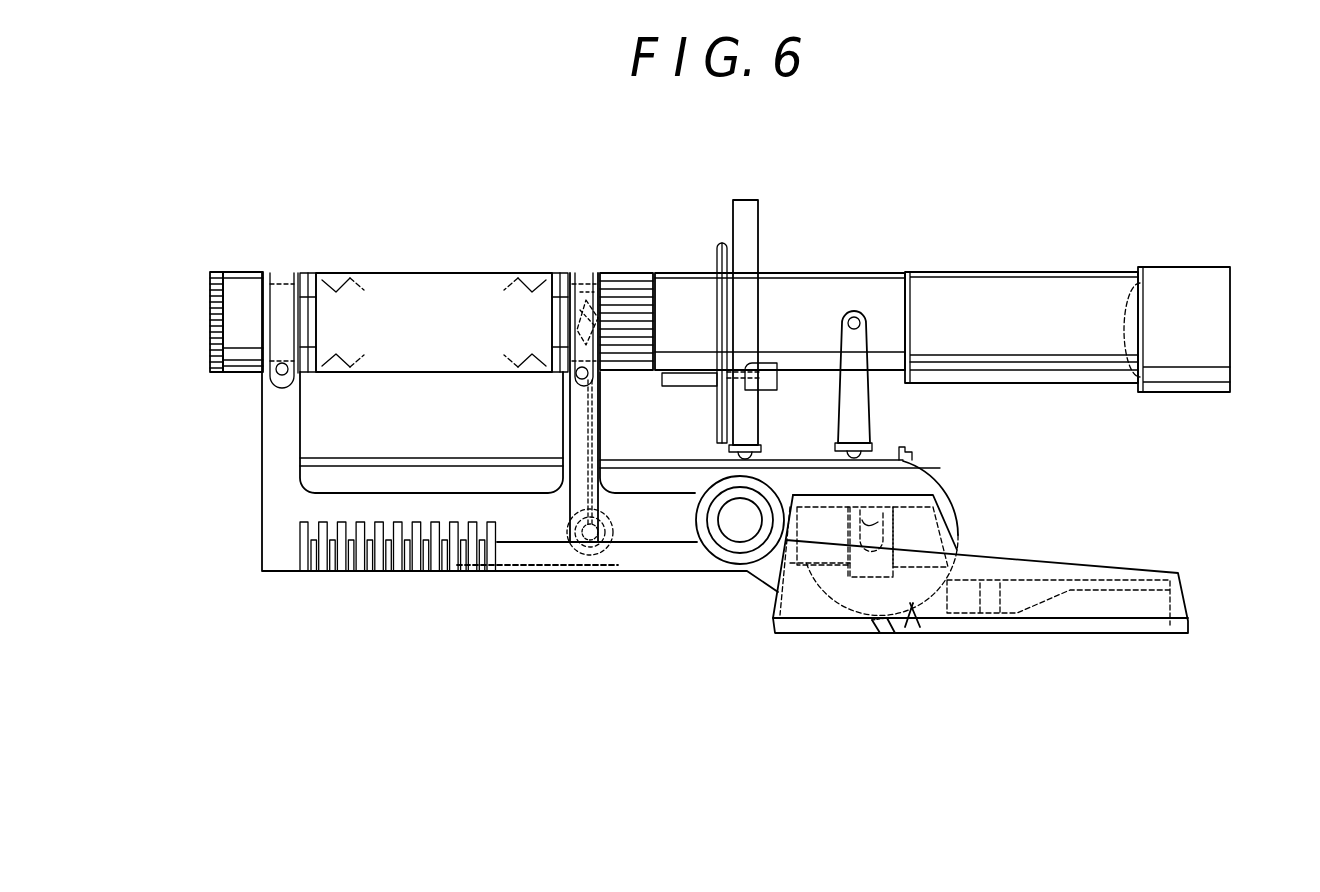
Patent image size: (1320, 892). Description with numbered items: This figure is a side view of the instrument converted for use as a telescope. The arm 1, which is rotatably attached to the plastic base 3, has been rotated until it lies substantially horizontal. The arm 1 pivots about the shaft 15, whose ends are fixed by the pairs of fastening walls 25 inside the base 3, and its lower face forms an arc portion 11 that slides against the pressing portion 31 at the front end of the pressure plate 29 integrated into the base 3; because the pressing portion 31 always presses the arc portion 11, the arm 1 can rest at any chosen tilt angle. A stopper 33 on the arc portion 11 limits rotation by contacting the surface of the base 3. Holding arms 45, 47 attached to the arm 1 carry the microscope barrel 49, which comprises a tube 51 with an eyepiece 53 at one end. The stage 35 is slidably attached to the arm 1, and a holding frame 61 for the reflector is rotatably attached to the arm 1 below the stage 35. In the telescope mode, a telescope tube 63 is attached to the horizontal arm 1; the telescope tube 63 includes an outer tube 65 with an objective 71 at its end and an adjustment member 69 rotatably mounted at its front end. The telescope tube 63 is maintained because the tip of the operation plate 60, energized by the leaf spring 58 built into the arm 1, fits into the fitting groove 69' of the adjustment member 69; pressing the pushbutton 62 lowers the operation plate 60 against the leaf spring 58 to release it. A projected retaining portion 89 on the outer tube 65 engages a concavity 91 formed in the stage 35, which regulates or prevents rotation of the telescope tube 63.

The arm 1 is at (562, 573).
The base 3 is at (1100, 633).
The arc portion 11 is at (917, 620).
The shaft 15 is at (870, 512).
The fastening walls 25 is at (887, 540).
The pressure plate 29 is at (905, 627).
The pressing portion 31 is at (867, 627).
The stopper 33 is at (905, 452).
The stage 35 is at (752, 222).
The holding arm 45 is at (292, 412).
The holding arm 47 is at (568, 418).
The microscope barrel 49 is at (396, 272).
The tube 51 is at (443, 350).
The eyepiece 53 is at (210, 311).
The leaf spring 58 is at (533, 573).
The operation plate 60 is at (597, 442).
The holding frame 61 is at (856, 340).
The pushbutton 62 is at (618, 545).
The telescope tube 63 is at (1018, 272).
The outer tube 65 is at (1078, 385).
The adjustment member 69 is at (626, 270).
The fitting groove 69' is at (564, 258).
The objective 71 is at (1143, 312).
The retaining portion 89 is at (690, 386).
The concavity 91 is at (770, 382).